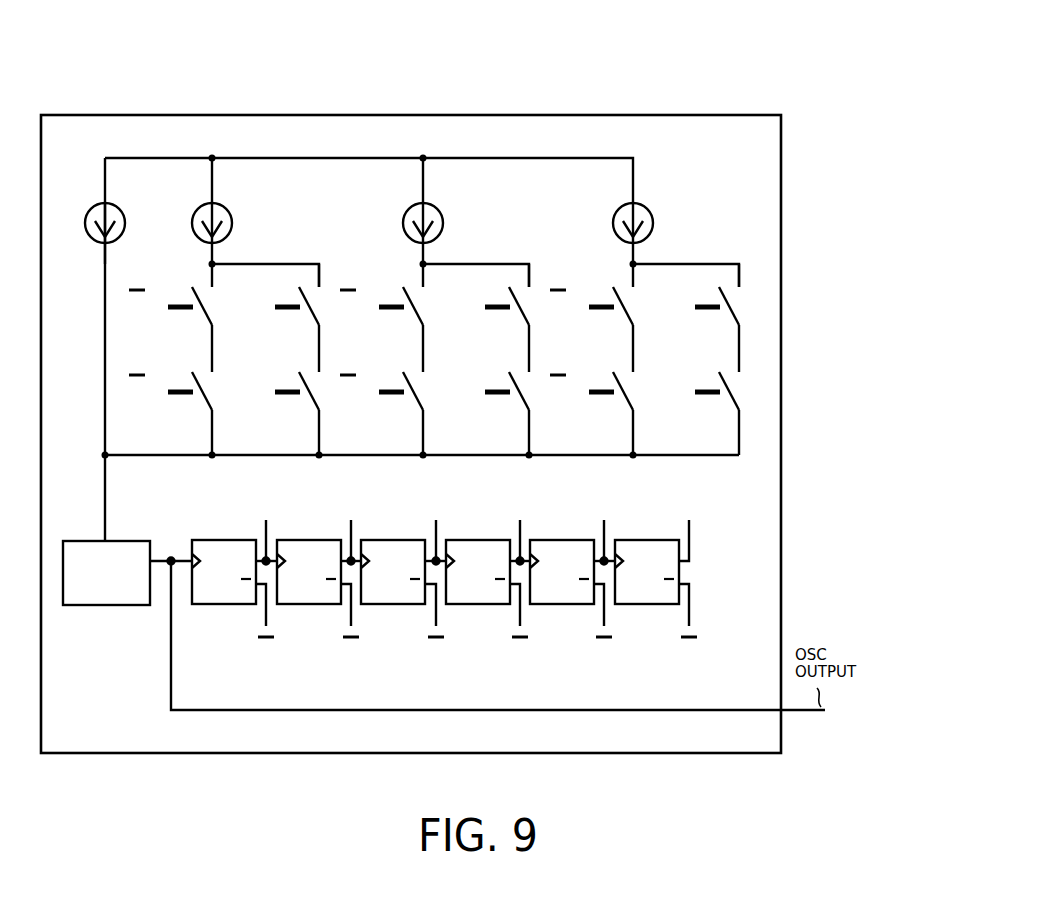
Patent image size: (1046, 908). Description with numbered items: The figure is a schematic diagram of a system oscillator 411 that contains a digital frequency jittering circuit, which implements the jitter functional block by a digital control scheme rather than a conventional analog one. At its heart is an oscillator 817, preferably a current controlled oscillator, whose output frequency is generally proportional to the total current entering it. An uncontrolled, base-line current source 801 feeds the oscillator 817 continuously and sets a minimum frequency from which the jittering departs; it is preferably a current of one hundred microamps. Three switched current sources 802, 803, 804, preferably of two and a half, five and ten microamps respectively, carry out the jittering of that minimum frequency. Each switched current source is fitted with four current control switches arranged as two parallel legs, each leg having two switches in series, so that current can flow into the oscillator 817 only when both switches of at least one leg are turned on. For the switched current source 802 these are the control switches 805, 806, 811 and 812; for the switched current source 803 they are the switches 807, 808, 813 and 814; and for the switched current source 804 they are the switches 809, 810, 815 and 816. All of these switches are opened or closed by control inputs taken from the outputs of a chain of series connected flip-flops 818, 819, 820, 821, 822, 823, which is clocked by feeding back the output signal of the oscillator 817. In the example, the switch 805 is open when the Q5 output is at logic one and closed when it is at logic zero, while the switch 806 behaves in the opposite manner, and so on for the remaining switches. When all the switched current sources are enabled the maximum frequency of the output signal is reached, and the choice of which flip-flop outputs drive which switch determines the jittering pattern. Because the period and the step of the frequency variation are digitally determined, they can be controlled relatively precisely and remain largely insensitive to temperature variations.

The system oscillator 411 is at (482, 86).
The base-line current source 801 is at (117, 208).
The switched current source 802 is at (224, 208).
The switched current source 803 is at (435, 208).
The switched current source 804 is at (645, 208).
The current control switch 805 is at (170, 318).
The current control switch 806 is at (277, 318).
The current control switch 807 is at (381, 318).
The current control switch 808 is at (487, 318).
The current control switch 809 is at (591, 318).
The current control switch 810 is at (697, 318).
The current control switch 811 is at (170, 413).
The current control switch 812 is at (277, 413).
The current control switch 813 is at (381, 413).
The current control switch 814 is at (487, 413).
The current control switch 815 is at (591, 413).
The current control switch 816 is at (697, 413).
The oscillator 817 is at (105, 606).
The flip-flop 818 is at (224, 605).
The flip-flop 819 is at (309, 605).
The flip-flop 820 is at (393, 605).
The flip-flop 821 is at (478, 605).
The flip-flop 822 is at (562, 605).
The flip-flop 823 is at (647, 605).